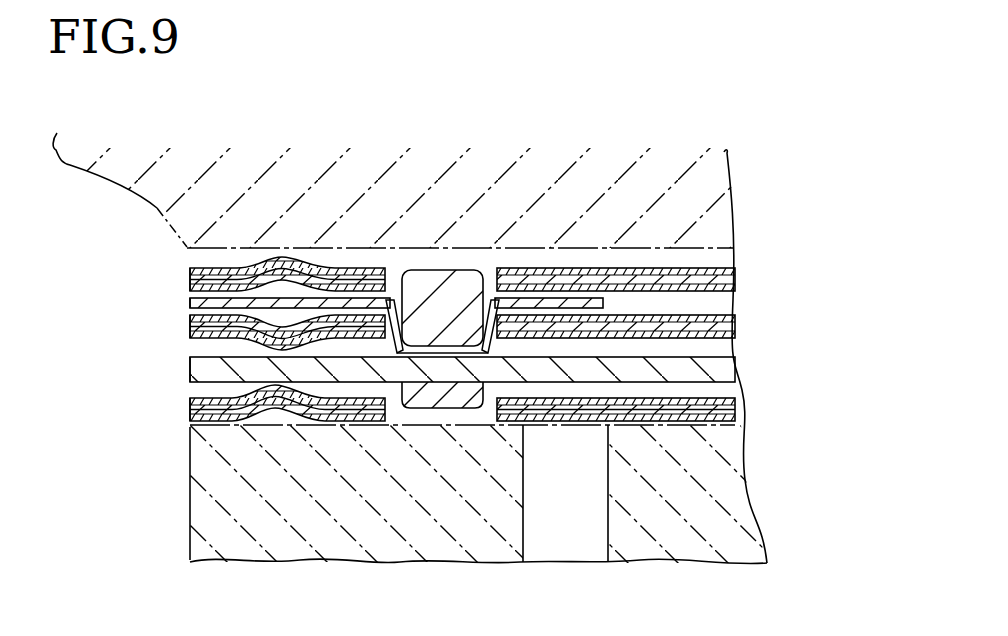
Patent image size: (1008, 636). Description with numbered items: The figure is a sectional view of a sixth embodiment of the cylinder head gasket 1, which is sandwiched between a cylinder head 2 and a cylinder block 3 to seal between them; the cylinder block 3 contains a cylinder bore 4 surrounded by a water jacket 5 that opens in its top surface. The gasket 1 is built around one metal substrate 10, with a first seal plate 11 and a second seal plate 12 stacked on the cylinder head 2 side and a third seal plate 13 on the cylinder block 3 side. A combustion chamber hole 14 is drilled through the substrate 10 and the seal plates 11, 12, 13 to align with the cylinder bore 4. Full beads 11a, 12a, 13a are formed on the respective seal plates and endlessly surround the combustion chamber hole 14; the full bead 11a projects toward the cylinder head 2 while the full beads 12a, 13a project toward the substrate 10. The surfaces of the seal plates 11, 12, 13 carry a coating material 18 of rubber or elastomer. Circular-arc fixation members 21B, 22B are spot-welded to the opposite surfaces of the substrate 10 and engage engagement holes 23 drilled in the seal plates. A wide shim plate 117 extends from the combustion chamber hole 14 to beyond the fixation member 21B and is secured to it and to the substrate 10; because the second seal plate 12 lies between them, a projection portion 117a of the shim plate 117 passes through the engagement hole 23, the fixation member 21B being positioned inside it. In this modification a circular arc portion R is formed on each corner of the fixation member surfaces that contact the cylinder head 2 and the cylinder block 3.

The cylinder head gasket 1 is at (745, 368).
The cylinder head 2 is at (727, 218).
The cylinder block 3 is at (398, 545).
The cylinder bore 4 is at (190, 530).
The water jacket 5 is at (527, 533).
The substrate 10 is at (727, 363).
The first seal plate 11 is at (733, 277).
The full bead 11a is at (283, 262).
The second seal plate 12 is at (733, 327).
The full bead 12a is at (290, 350).
The third seal plate 13 is at (743, 407).
The full bead 13a is at (257, 388).
The combustion chamber hole 14 is at (190, 327).
The coating material 18 is at (233, 277).
The fixation member 21B is at (447, 271).
The fixation member 22B is at (417, 408).
The engagement hole 23 is at (398, 330).
The shim plate 117 is at (336, 298).
The projection portion 117a is at (497, 344).
The circular arc portion R is at (480, 272).